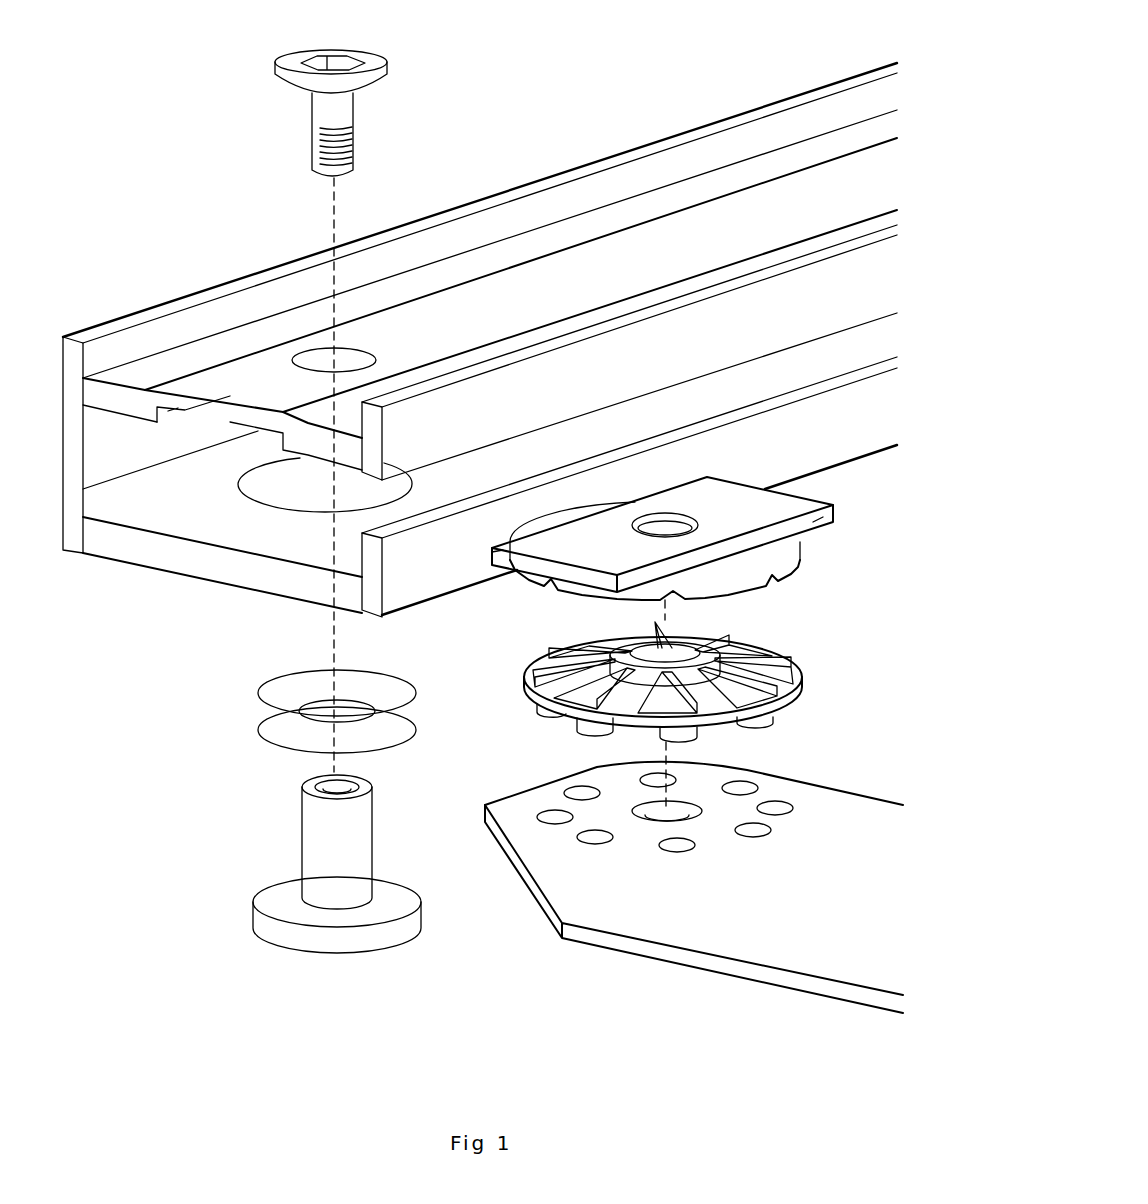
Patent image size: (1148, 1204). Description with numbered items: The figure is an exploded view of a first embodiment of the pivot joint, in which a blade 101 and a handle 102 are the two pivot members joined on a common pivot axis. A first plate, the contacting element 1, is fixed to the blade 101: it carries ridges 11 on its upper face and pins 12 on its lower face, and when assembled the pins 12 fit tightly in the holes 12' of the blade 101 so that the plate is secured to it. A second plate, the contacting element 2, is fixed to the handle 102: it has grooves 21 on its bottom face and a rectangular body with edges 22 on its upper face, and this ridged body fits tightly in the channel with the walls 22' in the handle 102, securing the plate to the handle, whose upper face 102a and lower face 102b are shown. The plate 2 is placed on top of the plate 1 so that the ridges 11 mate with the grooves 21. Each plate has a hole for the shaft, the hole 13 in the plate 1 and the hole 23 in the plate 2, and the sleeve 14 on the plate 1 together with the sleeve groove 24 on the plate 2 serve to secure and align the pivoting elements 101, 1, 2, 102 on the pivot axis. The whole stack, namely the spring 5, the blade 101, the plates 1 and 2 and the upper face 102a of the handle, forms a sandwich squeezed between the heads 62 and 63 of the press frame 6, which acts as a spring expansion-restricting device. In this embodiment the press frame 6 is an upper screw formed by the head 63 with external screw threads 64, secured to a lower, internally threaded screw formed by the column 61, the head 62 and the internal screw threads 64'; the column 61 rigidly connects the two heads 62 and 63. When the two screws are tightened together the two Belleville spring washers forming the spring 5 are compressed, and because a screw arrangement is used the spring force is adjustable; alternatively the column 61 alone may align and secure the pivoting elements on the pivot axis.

The contacting element 1 is at (701, 710).
The contacting element 2 is at (669, 524).
The spring 5 is at (260, 650).
The press frame 6 is at (295, 855).
The alignment structure 11 is at (757, 641).
The joining structure 12 is at (676, 731).
The joining structure 12' is at (690, 812).
The hole for shaft 13 is at (683, 653).
The alignment and securing structure 14 is at (628, 648).
The alignment structure 21 is at (773, 578).
The joining structure 22 is at (669, 534).
The joining structure 22' is at (193, 423).
The hole for shaft 23 is at (688, 516).
The alignment and securing structure 24 is at (659, 522).
The connecting structure 61 is at (308, 848).
The position-limiting member 62 is at (260, 917).
The position-limiting member 63 is at (374, 58).
The screw threads, external 64 is at (361, 134).
The screw threads, internal 64' is at (364, 776).
The pivot member 101 is at (694, 889).
The pivot member 102 is at (143, 311).
The upper face of stock or handle 102a is at (128, 404).
The lower face of stock or handle 102b is at (204, 537).